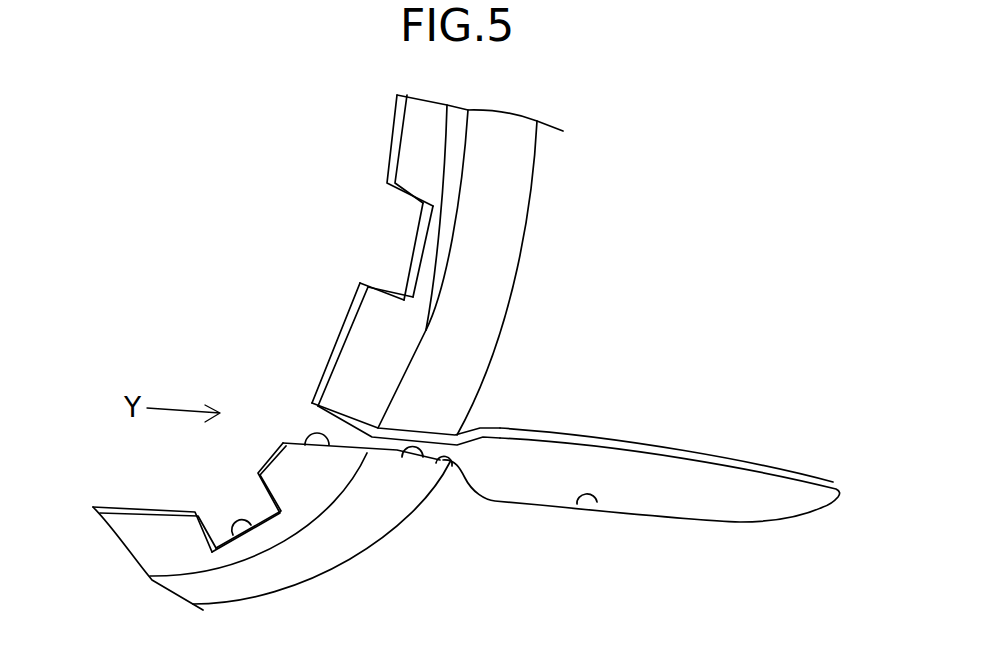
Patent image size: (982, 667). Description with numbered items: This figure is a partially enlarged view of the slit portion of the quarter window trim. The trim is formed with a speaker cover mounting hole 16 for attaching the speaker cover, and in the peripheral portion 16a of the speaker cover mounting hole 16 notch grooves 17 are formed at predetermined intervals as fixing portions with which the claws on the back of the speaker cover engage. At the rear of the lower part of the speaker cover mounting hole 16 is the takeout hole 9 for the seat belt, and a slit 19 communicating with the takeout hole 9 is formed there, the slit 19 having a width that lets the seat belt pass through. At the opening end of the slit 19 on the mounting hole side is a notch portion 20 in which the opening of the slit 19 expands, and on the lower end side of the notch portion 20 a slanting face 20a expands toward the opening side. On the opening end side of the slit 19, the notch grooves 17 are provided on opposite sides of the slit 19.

The takeout hole 9 is at (597, 510).
The speaker cover mounting hole 16 is at (423, 270).
The peripheral portion 16a is at (347, 340).
The notch grooves 17 is at (418, 258).
The slit 19 is at (425, 457).
The notch portion 20 is at (288, 487).
The slanting face 20a is at (325, 443).